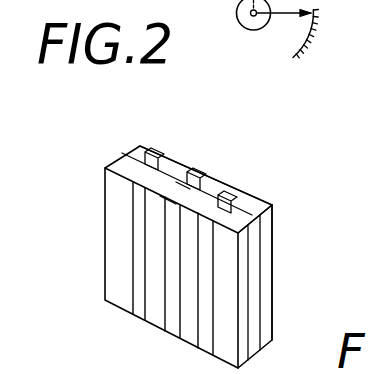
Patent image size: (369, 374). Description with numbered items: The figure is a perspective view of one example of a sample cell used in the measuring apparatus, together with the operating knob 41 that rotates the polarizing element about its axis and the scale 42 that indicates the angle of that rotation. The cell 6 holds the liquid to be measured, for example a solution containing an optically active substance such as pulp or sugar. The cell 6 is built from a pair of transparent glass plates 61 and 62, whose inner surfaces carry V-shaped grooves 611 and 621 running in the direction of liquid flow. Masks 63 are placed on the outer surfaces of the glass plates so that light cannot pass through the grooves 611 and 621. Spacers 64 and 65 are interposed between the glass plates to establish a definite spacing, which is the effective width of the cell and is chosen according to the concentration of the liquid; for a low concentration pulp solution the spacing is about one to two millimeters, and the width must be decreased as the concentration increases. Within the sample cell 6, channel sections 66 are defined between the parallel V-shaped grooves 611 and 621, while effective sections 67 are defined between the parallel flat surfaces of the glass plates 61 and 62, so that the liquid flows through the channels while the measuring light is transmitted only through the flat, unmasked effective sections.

The operating knob 41 is at (247, 23).
The scale 42 is at (311, 40).
The cell 6 is at (143, 160).
The transparent glass plate 61 is at (256, 241).
The V-shaped groove 611 is at (182, 184).
The transparent glass plate 62 is at (255, 200).
The V-shaped groove 621 is at (195, 176).
The mask 63 is at (178, 160).
The spacer 64 is at (268, 207).
The spacer 65 is at (133, 158).
The channel section 66 is at (162, 156).
The effective section 67 is at (168, 196).